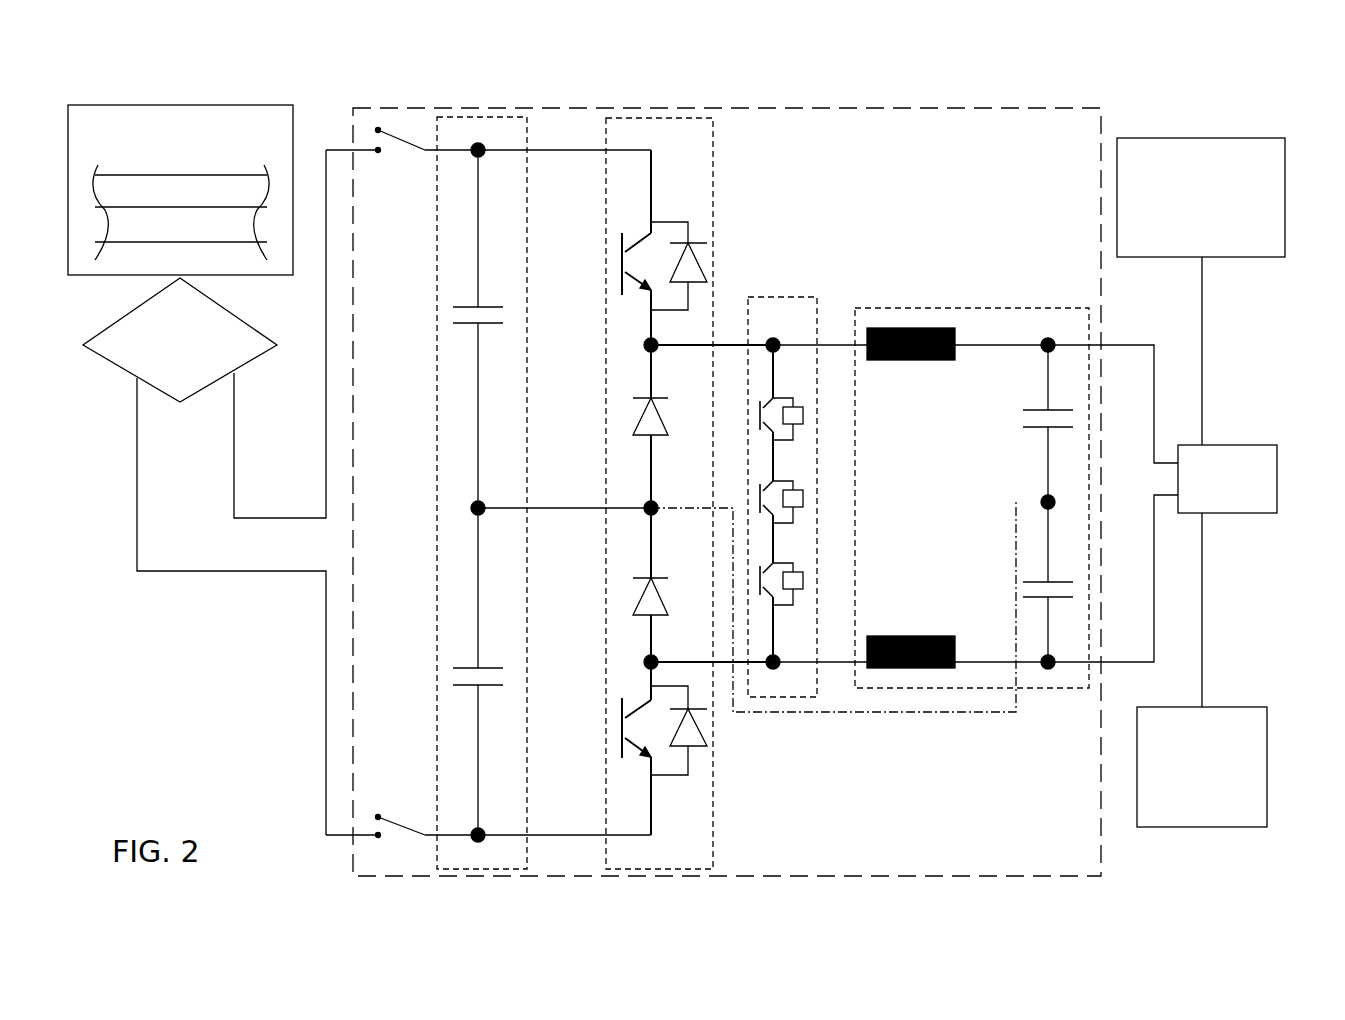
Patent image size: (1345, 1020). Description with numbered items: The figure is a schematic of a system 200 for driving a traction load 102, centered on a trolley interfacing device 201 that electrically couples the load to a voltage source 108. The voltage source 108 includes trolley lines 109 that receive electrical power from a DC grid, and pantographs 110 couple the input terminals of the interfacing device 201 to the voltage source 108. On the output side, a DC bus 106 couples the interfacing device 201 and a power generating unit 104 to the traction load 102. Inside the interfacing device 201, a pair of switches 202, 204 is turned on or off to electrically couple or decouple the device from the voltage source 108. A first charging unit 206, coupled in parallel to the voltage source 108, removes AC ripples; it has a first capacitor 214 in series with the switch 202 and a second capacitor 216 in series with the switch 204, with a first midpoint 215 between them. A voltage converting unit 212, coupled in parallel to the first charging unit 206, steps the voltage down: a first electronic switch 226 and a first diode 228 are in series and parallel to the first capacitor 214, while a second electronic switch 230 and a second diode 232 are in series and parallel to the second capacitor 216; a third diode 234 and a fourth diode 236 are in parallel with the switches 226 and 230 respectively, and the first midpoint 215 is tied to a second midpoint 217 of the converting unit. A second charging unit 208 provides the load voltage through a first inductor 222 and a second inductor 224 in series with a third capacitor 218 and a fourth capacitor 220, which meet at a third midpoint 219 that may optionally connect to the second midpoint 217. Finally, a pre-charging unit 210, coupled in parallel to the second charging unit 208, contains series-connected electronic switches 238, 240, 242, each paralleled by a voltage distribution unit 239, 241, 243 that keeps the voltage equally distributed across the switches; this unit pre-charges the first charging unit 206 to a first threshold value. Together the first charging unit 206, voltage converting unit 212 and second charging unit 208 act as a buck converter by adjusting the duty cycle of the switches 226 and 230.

The system 200 is at (1228, 86).
The interfacing device 201 is at (1101, 108).
The traction load 102 is at (1245, 707).
The power generating unit 104 is at (1266, 136).
The DC bus 106 is at (1216, 445).
The voltage source 108 is at (190, 105).
The trolley lines 109 is at (160, 243).
The pantographs 110 is at (258, 316).
The switch 202 is at (390, 130).
The switch 204 is at (390, 817).
The first charging unit 206 is at (480, 117).
The second charging unit 208 is at (997, 308).
The pre-charging unit 210 is at (780, 297).
The voltage converting unit 212 is at (657, 118).
The first capacitor 214 is at (462, 323).
The first midpoint 215 is at (476, 506).
The second capacitor 216 is at (462, 685).
The second midpoint 217 is at (645, 506).
The third capacitor 218 is at (1035, 427).
The third midpoint 219 is at (1042, 502).
The fourth capacitor 220 is at (1035, 582).
The first inductor 222 is at (911, 328).
The second inductor 224 is at (911, 636).
The first electronic switch 226 is at (620, 250).
The first diode 228 is at (632, 422).
The second electronic switch 230 is at (620, 714).
The second diode 232 is at (632, 602).
The third diode 234 is at (704, 262).
The fourth diode 236 is at (708, 734).
The electronic switch 238 is at (760, 420).
The voltage distribution unit 239 is at (793, 398).
The electronic switch 240 is at (760, 490).
The voltage distribution unit 241 is at (793, 481).
The electronic switch 242 is at (760, 572).
The voltage distribution unit 243 is at (793, 563).